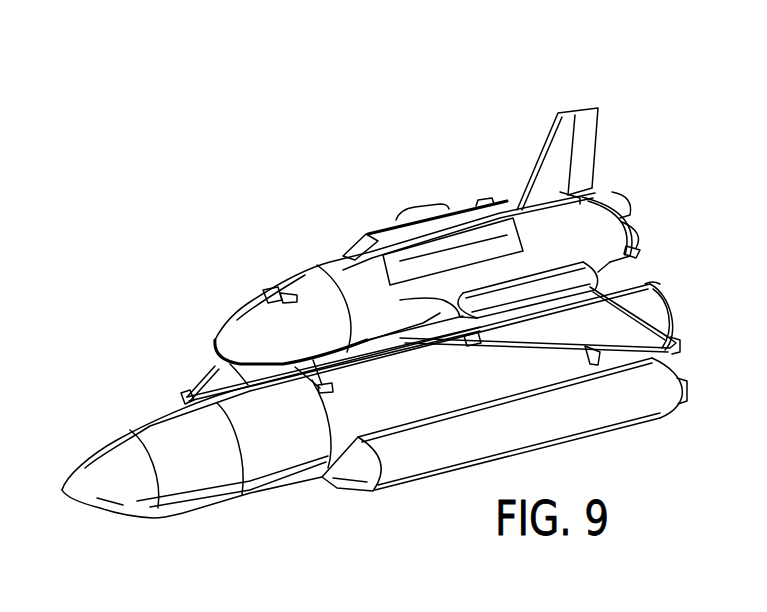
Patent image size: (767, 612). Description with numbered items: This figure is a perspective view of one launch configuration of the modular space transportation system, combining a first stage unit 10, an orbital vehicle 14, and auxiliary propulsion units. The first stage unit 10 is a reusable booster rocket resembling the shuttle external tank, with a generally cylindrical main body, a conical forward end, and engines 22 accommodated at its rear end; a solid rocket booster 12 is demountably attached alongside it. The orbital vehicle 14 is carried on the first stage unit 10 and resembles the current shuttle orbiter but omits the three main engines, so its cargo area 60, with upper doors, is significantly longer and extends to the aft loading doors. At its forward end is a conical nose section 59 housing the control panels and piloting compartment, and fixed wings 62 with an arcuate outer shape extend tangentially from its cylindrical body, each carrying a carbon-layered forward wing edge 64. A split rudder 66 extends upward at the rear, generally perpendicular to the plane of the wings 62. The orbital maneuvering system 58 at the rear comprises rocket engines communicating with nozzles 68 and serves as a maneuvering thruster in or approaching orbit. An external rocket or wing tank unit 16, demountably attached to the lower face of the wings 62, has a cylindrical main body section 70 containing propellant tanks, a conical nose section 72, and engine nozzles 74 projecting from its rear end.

The first stage unit 10 is at (283, 501).
The solid rocket booster 12 is at (428, 465).
The orbital vehicle 14 is at (299, 257).
The external rocket 16 is at (361, 227).
The engine 22 is at (692, 313).
The orbital maneuvering system 58 is at (377, 201).
The conical nose section 59 is at (240, 318).
The cargo area 60 is at (450, 245).
The fixed wings 62 is at (553, 328).
The forward wing edge 64 is at (594, 365).
The vertical tail fin 66 is at (558, 119).
The nozzle 68 is at (624, 195).
The cylindrical main body section 70 is at (541, 277).
The conical nose section 72 is at (440, 300).
The engine nozzle 74 is at (630, 252).